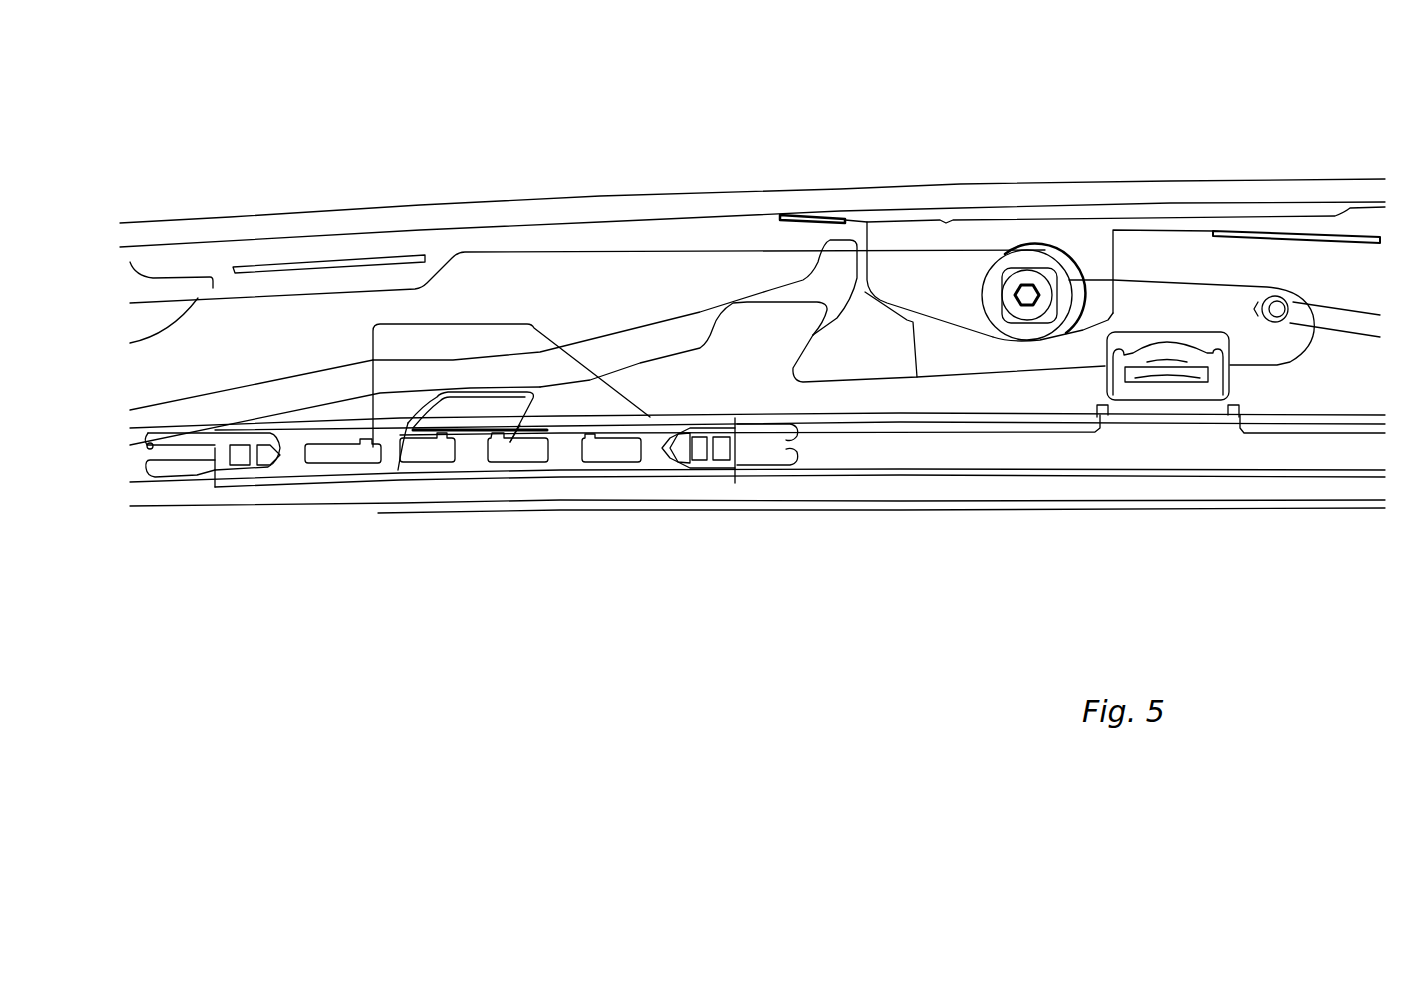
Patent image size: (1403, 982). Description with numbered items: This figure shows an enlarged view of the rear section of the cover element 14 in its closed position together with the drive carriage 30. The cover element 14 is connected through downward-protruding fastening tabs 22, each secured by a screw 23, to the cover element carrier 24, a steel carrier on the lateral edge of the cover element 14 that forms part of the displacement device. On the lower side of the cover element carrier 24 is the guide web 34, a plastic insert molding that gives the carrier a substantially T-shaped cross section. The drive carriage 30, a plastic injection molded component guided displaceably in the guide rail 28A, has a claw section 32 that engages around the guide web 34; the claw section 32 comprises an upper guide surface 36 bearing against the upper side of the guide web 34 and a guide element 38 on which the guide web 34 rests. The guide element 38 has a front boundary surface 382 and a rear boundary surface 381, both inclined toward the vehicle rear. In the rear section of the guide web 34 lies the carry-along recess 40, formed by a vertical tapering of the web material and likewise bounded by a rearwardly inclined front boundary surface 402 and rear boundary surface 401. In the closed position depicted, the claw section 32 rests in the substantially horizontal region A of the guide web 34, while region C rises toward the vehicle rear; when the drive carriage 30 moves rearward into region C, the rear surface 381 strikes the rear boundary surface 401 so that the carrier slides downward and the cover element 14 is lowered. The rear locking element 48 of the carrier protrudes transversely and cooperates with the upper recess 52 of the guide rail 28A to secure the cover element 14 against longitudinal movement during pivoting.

The cover element 14 is at (608, 200).
The fastening tabs 22 is at (1083, 247).
The screw 23 is at (1025, 285).
The cover element carrier 24 is at (262, 385).
The guide rail 28A is at (903, 509).
The drive carriage 30 is at (653, 460).
The claw section 32 is at (448, 357).
The guide web 34 is at (330, 330).
The upper guide surface 36 is at (510, 337).
The guide element 38 is at (470, 407).
The rear boundary surface 381 is at (530, 412).
The front boundary surface 382 is at (403, 470).
The carry-along recess 40 is at (767, 325).
The rear boundary surface 401 is at (863, 280).
The front boundary surface 402 is at (713, 332).
The rear locking element 48 is at (1157, 388).
The upper recess 52 is at (1108, 415).
The region A is at (516, 368).
The region C is at (723, 307).